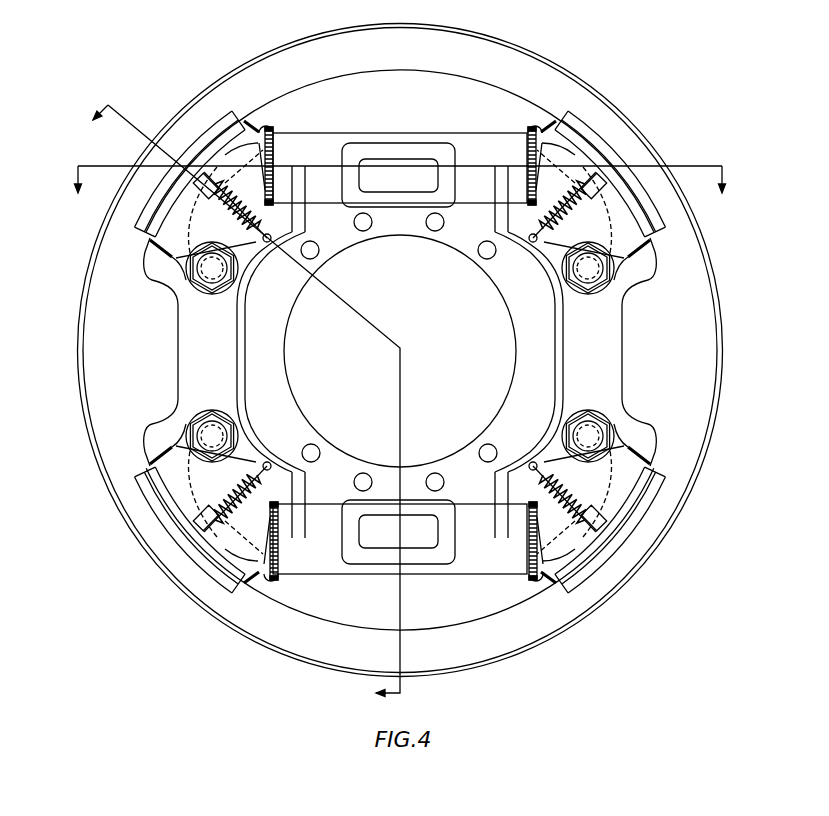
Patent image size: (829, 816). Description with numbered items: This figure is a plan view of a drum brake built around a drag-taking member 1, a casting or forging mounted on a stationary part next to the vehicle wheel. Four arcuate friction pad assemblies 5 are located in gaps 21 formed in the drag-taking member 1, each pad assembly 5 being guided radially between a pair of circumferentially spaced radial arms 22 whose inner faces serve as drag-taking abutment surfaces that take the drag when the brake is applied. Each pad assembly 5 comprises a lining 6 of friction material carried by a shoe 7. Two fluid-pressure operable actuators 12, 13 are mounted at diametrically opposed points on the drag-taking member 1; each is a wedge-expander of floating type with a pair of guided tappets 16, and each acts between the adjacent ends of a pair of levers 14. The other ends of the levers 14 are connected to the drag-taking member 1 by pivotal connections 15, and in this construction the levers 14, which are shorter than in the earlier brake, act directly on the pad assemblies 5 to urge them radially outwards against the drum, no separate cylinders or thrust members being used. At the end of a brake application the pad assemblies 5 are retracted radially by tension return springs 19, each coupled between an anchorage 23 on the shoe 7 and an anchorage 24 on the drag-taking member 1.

The drag-taking member 1 is at (452, 466).
The friction pad assembly 5 is at (633, 512).
The lining 6 is at (660, 493).
The shoe 7 is at (603, 558).
The fluid-pressure operable actuator 12 is at (413, 135).
The fluid-pressure operable actuator 13 is at (483, 575).
The lever 14 is at (513, 492).
The pivotal connection 15 is at (582, 420).
The tappet 16 is at (528, 577).
The tension return spring 19 is at (560, 493).
The gap 21 is at (647, 460).
The radial arm 22 is at (548, 590).
The anchorage 23 is at (572, 547).
The anchorage 24 is at (542, 467).